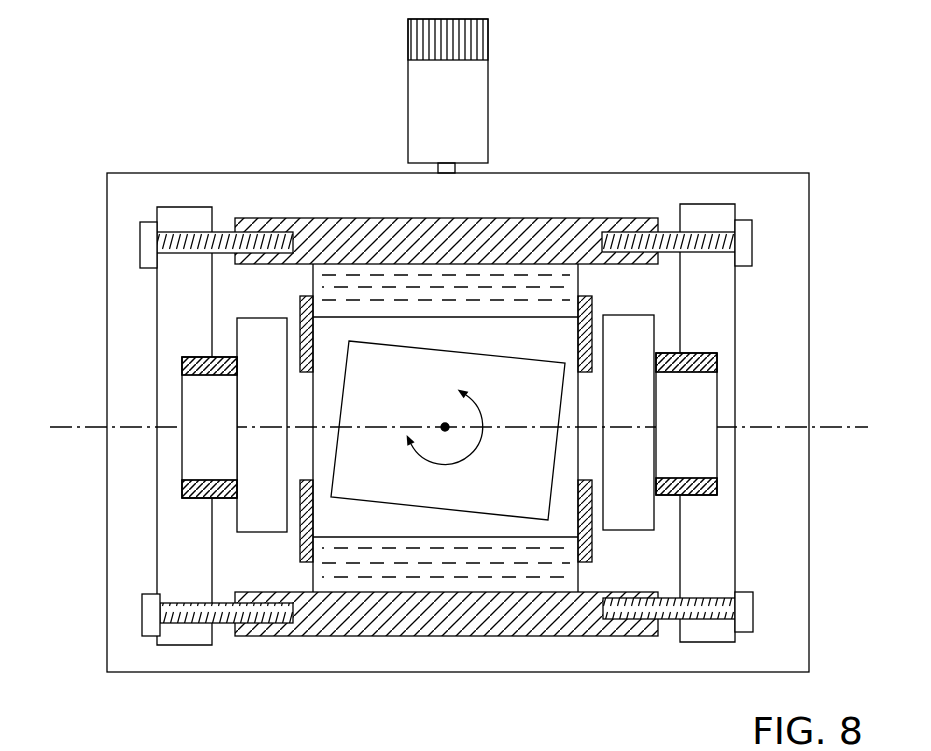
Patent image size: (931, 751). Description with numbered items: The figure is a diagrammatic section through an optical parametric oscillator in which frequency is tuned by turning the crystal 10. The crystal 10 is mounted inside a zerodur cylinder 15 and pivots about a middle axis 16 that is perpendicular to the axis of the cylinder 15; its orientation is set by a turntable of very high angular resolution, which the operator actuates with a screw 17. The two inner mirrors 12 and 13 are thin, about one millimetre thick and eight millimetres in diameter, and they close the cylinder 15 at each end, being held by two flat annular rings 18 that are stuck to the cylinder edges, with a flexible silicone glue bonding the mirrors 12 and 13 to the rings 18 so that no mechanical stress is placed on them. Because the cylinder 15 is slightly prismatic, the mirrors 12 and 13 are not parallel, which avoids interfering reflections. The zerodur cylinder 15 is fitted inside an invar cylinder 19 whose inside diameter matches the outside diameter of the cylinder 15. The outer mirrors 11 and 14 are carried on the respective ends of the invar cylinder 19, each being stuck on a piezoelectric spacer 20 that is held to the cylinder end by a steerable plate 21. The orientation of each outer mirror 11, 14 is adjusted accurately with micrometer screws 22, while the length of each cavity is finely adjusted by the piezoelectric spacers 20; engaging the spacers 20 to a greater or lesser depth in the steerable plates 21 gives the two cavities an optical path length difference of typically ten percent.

The crystal 10 is at (452, 488).
The outer mirror 11 is at (248, 405).
The inner mirror 12 is at (307, 390).
The inner mirror 13 is at (583, 387).
The outer mirror 14 is at (642, 508).
The zerodur cylinder 15 is at (498, 280).
The middle axis 16 is at (445, 427).
The screw 17 is at (473, 33).
The flat annular rings 18 is at (593, 297).
The invar cylinder 19 is at (377, 237).
The piezoelectric spacers 20 is at (183, 487).
The steerable plates 21 is at (178, 337).
The micrometer screws 22 is at (218, 233).